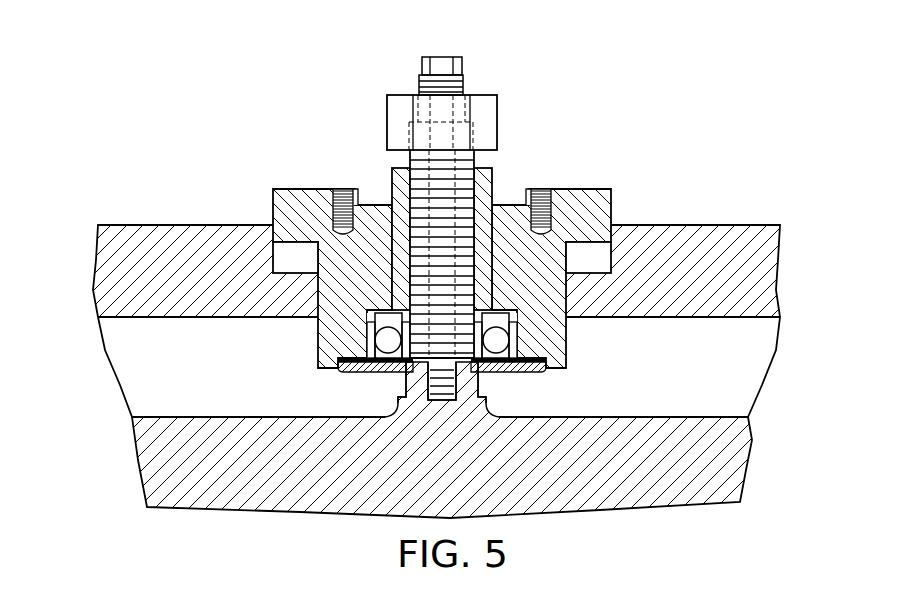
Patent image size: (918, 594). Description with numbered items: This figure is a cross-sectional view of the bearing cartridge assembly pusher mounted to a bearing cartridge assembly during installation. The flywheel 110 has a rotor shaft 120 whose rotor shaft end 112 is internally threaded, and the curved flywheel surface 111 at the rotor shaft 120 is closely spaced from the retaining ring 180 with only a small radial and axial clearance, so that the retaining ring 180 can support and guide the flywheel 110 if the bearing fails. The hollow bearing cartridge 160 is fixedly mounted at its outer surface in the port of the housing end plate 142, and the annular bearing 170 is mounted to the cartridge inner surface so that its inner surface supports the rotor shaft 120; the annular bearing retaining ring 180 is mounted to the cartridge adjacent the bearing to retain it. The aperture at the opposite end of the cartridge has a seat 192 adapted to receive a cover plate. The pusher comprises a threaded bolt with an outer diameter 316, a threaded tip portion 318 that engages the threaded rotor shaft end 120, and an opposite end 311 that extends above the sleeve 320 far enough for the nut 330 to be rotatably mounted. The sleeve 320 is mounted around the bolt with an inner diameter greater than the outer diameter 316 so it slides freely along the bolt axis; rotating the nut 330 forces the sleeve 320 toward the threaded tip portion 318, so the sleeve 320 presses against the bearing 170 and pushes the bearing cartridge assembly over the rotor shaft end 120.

The flywheel 110 is at (747, 437).
The flywheel surface 111 is at (665, 417).
The rotor shaft end 112 is at (410, 368).
The rotor shaft 120 is at (482, 388).
The housing end plate 142 is at (690, 226).
The hollow bearing cartridge 160 is at (578, 189).
The annular bearing 170 is at (503, 338).
The annular bearing retaining ring 180 is at (338, 368).
The seat 192 is at (512, 205).
The other end of bolt 311 is at (420, 78).
The outer diameter 316 is at (490, 35).
The threaded tip portion 318 is at (439, 400).
The sleeve 320 is at (488, 178).
The nut 330 is at (497, 103).